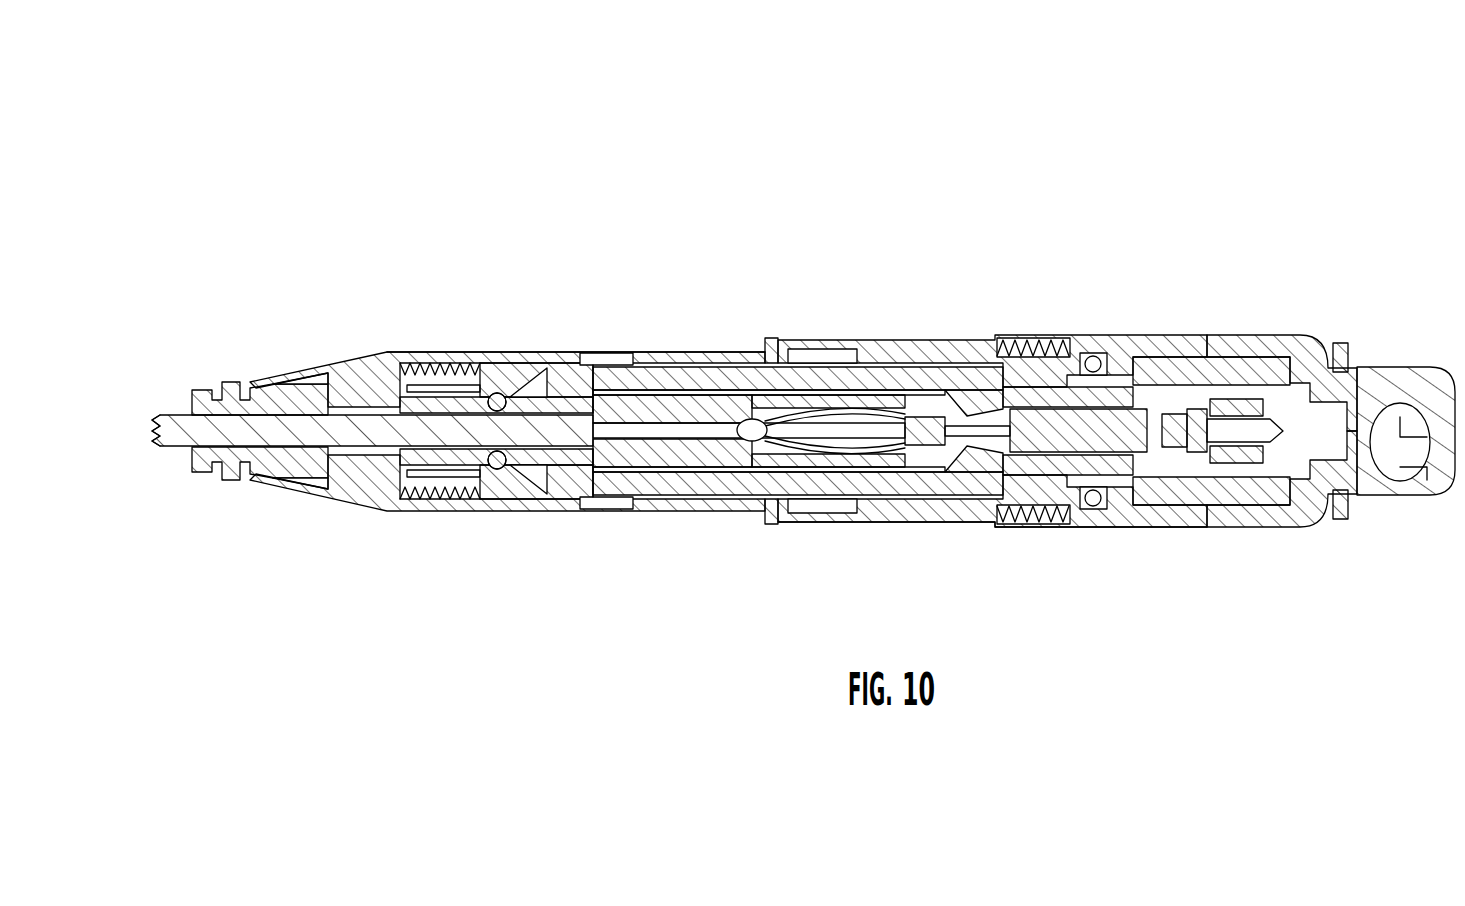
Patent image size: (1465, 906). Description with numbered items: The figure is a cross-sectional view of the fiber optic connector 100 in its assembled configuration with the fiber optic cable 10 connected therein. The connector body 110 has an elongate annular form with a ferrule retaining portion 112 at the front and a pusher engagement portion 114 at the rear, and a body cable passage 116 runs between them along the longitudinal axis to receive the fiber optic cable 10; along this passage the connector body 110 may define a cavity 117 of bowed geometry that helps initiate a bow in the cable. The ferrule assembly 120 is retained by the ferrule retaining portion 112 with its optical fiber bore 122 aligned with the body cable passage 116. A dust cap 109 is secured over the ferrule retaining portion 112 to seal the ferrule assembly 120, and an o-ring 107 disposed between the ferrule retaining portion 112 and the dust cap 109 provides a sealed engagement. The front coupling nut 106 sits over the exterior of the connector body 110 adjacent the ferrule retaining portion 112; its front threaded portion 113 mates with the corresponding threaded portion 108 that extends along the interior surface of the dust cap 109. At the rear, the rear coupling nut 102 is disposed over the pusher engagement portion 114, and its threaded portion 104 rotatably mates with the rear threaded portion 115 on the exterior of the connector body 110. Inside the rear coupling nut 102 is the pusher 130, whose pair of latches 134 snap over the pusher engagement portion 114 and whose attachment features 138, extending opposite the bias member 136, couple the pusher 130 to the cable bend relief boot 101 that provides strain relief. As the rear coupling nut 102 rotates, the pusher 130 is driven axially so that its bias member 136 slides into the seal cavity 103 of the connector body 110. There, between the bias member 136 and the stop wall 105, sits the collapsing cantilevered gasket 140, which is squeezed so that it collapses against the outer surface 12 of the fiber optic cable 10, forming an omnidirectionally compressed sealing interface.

The fiber optic cable 10 is at (172, 399).
The outer surface 12 is at (188, 455).
The fiber optic connector 100 is at (357, 187).
The cable bend relief boot 101 is at (223, 364).
The rear coupling nut 102 is at (401, 298).
The seal cavity 103 is at (490, 460).
The threaded portion 104 is at (425, 352).
The stop wall 105 is at (517, 470).
The front coupling nut 106 is at (950, 522).
The o-ring 107 is at (1095, 352).
The corresponding threaded portion 108 is at (1015, 522).
The dust cap 109 is at (1265, 520).
The connector body 110 is at (765, 345).
The ferrule retaining portion 112 is at (908, 534).
The front threaded portion 113 is at (1110, 516).
The pusher engagement portion 114 is at (507, 455).
The rear threaded portion 115 is at (487, 375).
The body cable passage 116 is at (625, 475).
The cavity 117 is at (832, 420).
The ferrule assembly 120 is at (1205, 345).
The optical fiber bore 122 is at (1020, 345).
The pusher 130 is at (392, 395).
The pair of latches 134 is at (425, 488).
The bias member 136 is at (488, 456).
The attachment features 138 is at (348, 460).
The collapsing cantilevered gasket 140 is at (590, 360).